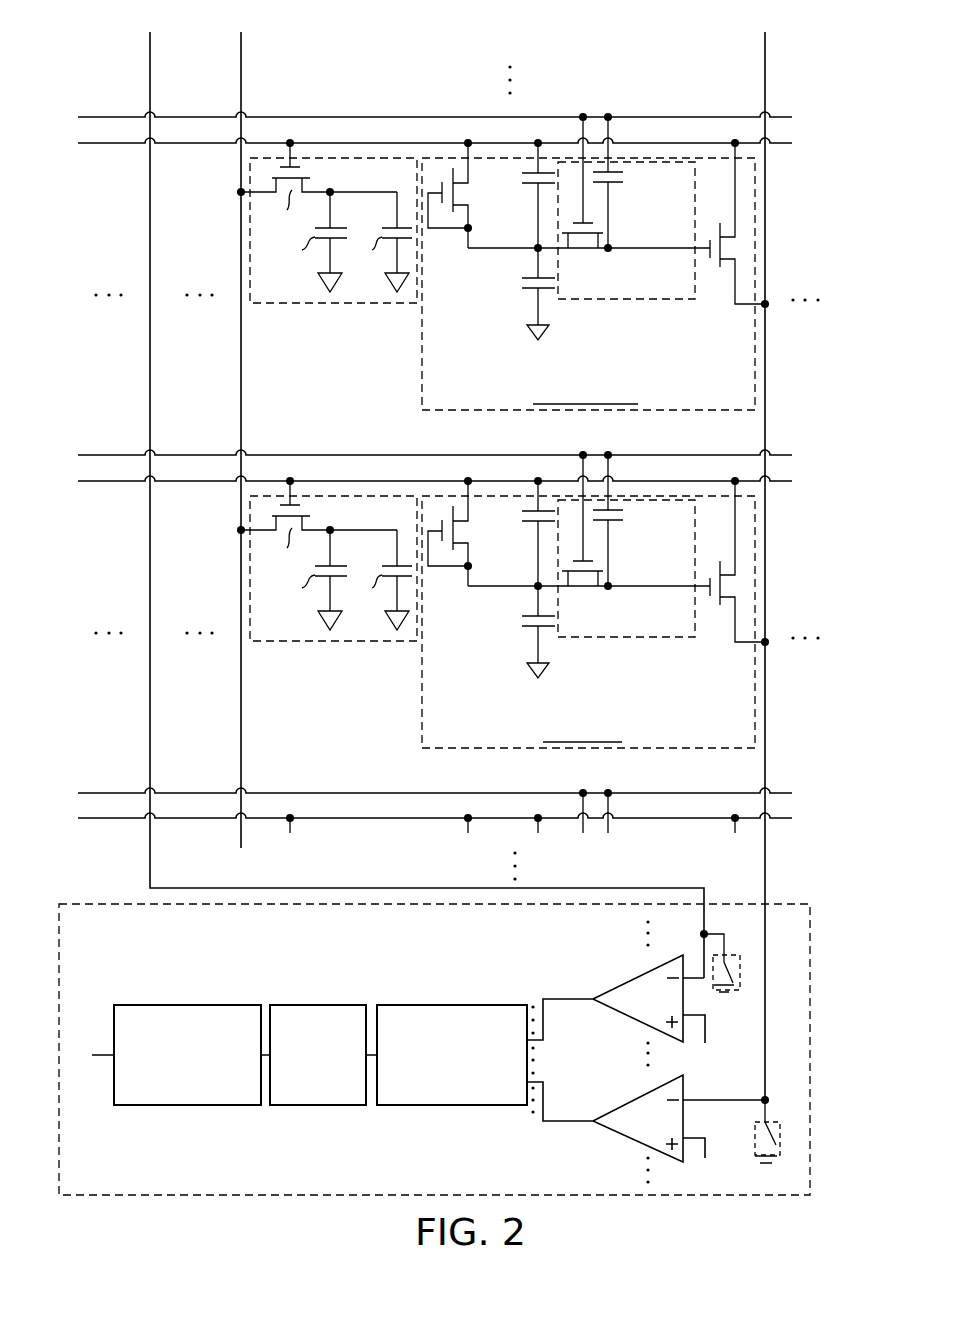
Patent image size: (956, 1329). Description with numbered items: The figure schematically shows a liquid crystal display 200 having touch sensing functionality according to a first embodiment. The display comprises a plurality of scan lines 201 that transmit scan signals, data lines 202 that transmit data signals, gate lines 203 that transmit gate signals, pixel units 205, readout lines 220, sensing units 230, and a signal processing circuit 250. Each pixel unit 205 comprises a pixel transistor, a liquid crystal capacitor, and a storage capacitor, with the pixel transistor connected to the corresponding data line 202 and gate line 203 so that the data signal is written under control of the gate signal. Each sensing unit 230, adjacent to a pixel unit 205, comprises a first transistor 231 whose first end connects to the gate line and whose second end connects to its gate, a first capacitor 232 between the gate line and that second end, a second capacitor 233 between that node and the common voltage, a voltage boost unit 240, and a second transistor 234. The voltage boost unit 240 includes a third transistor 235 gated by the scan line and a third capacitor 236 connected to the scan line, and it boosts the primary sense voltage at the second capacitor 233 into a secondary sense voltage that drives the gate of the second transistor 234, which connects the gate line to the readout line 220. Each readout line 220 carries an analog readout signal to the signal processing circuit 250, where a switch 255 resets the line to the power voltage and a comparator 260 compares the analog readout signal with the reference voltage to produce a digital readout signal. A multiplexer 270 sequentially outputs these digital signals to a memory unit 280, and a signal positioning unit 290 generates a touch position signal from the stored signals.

The liquid crystal display 200 is at (136, 55).
The scan line 201 is at (155, 117).
The data line 202 is at (243, 38).
The gate line 203 is at (155, 143).
The pixel unit 205 is at (328, 303).
The readout line 220 is at (152, 38).
The sensing unit 230 is at (422, 361).
The first transistor 231 is at (458, 193).
The first capacitor 232 is at (522, 180).
The second capacitor 233 is at (522, 285).
The second transistor 234 is at (727, 258).
The third transistor 235 is at (582, 242).
The third capacitor 236 is at (625, 176).
The voltage boost unit 240 is at (622, 300).
The signal processing circuit 250 is at (78, 904).
The switch 255 is at (736, 955).
The comparator 260 is at (652, 977).
The multiplexer 270 is at (458, 1106).
The memory unit 280 is at (318, 1106).
The signal positioning unit 290 is at (191, 1106).